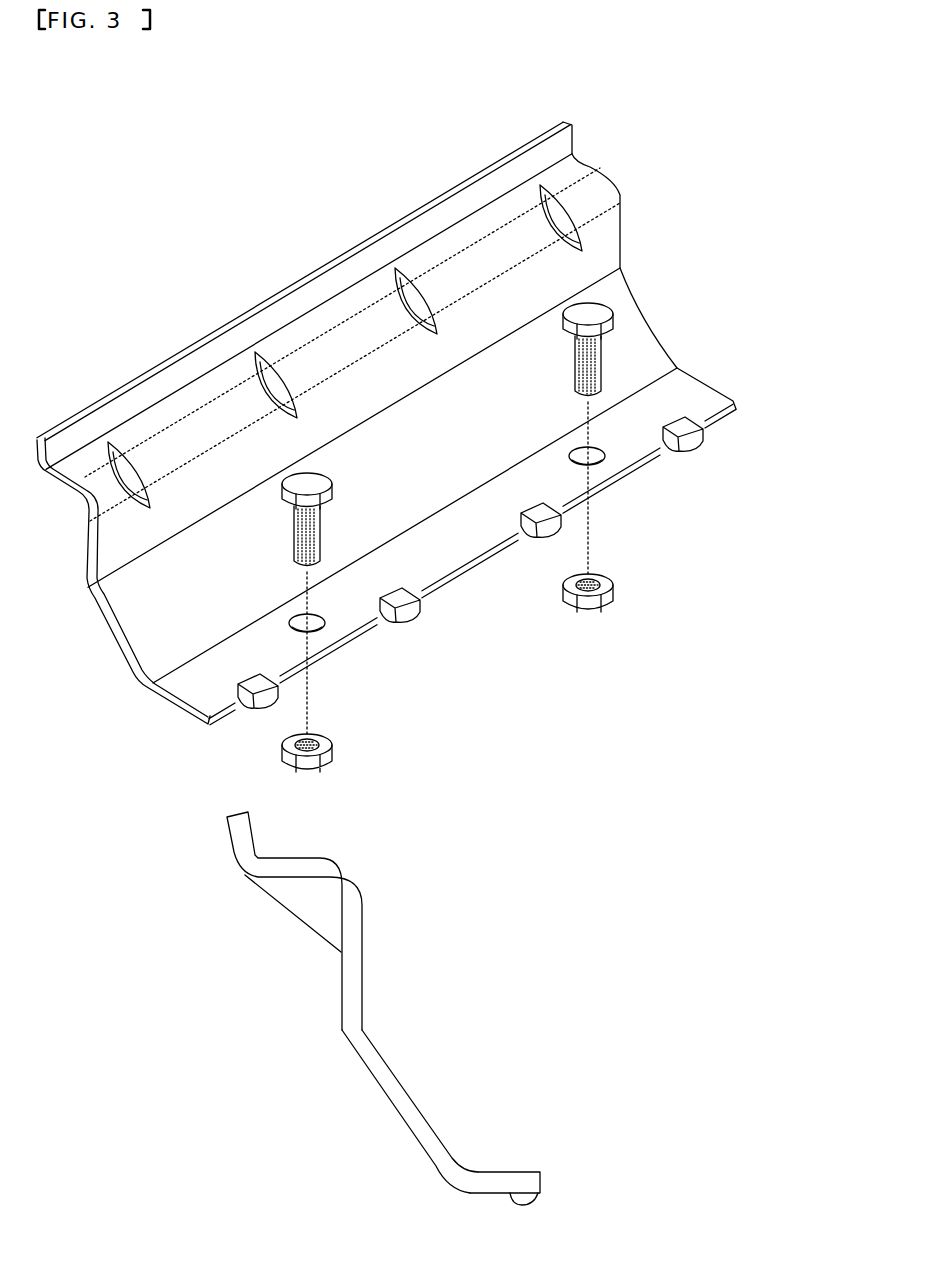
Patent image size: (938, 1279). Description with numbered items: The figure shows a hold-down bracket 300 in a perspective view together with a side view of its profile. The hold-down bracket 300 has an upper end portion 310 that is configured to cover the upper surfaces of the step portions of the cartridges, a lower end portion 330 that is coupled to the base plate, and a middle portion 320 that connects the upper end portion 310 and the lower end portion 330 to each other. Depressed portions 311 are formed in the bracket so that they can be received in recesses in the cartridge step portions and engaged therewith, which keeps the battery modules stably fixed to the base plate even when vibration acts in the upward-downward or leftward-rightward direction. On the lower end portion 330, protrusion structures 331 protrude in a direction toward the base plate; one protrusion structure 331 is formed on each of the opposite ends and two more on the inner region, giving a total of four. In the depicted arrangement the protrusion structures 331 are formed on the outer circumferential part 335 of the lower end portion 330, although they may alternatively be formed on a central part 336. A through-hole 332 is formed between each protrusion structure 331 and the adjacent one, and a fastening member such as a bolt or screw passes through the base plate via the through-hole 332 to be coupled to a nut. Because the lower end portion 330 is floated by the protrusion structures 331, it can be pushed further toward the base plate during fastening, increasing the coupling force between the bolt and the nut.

The hold-down bracket 300 is at (84, 154).
The upper end portion 310 is at (570, 170).
The depressed portion 311 is at (258, 352).
The middle portion 320 is at (622, 303).
The lower end portion 330 is at (690, 395).
The protrusion structure 331 is at (700, 440).
The through-hole 332 is at (600, 437).
The outer circumferential part 335 is at (463, 580).
The central part 336 is at (343, 603).